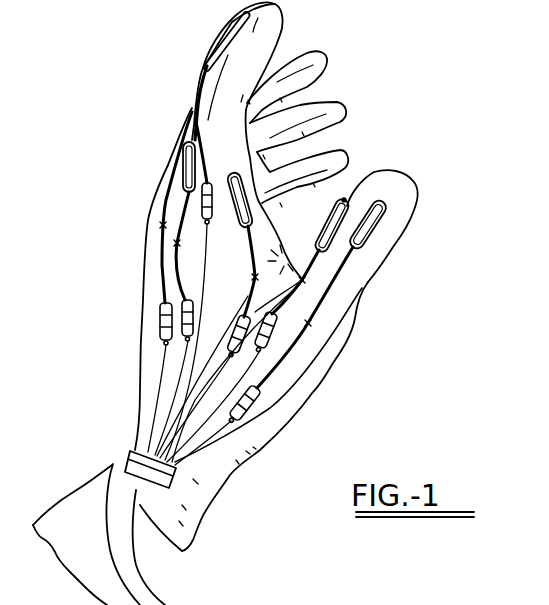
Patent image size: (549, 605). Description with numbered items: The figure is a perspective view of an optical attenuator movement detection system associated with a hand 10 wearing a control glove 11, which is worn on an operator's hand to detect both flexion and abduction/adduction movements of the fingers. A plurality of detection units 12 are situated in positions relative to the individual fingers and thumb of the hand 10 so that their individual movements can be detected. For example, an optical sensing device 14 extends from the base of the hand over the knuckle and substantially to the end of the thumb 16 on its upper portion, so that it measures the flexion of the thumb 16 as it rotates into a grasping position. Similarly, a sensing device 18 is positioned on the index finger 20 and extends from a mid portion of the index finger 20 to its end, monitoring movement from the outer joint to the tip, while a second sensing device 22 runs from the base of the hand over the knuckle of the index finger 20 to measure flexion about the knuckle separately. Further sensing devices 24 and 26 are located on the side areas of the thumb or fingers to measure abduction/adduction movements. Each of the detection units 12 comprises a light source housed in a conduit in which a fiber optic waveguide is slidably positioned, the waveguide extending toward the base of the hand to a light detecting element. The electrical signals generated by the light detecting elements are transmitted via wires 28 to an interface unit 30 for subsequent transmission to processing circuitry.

The hand 10 is at (353, 123).
The control glove 11 is at (313, 388).
The detection units 12 is at (175, 273).
The optical sensing device 14 is at (338, 278).
The thumb 16 is at (415, 190).
The sensing device 18 is at (192, 94).
The index finger 20 is at (228, 53).
The second sensing device 22 is at (253, 243).
The sensing device 24 is at (262, 307).
The sensing device 26 is at (185, 200).
The wires 28 is at (150, 387).
The interface unit 30 is at (127, 452).